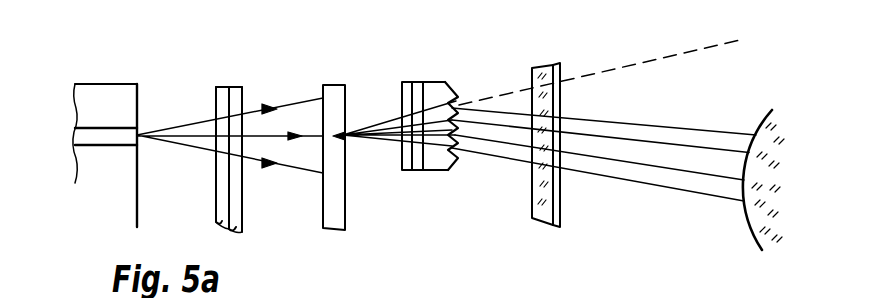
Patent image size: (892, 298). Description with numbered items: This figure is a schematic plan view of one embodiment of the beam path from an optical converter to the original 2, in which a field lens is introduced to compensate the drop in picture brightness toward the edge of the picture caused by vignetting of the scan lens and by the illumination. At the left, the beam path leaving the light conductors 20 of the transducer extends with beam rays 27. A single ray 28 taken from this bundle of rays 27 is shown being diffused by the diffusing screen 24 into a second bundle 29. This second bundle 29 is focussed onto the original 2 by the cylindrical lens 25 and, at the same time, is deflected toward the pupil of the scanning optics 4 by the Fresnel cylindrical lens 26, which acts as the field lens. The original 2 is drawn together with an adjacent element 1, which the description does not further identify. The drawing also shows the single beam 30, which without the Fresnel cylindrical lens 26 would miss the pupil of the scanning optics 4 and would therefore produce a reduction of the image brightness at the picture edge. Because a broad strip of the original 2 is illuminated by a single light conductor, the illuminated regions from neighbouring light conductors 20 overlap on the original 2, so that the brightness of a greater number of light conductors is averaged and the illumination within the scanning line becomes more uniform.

The etalon plate 1 is at (531, 72).
The original 2 is at (560, 70).
The scanning optics 4 is at (748, 220).
The light conductors 20 is at (100, 137).
The diffusing screen 24 is at (332, 92).
The cylindrical lens 25 is at (407, 88).
The Fresnel cylindrical lens 26 is at (435, 86).
The beam rays 27 is at (193, 142).
The single ray 28 is at (277, 135).
The second bundle 29 is at (387, 137).
The single beam 30 is at (608, 70).